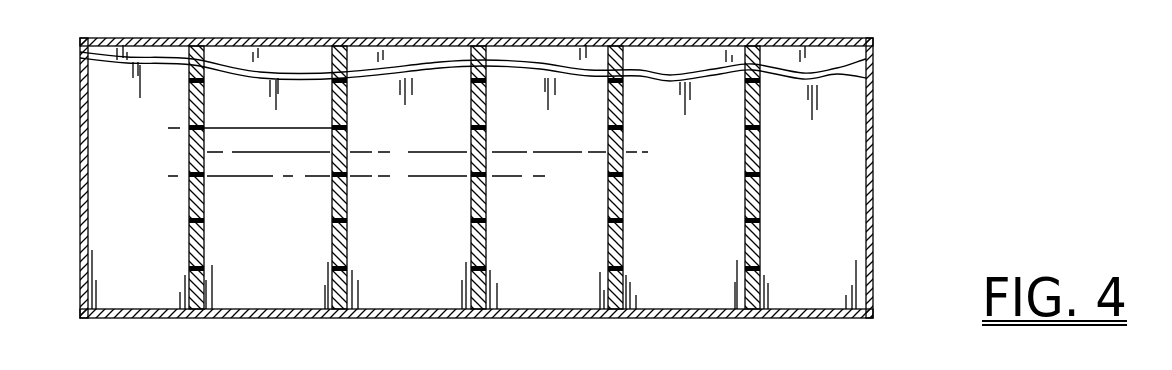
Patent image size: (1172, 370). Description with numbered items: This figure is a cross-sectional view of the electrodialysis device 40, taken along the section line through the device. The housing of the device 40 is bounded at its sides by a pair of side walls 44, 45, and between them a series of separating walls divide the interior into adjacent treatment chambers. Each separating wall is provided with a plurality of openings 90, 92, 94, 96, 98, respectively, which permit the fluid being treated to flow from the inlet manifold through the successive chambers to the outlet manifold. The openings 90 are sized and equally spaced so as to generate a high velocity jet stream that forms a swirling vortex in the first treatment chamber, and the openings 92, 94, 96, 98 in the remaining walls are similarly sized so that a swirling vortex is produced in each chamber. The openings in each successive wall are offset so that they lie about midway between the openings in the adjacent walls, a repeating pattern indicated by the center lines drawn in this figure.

The electrodialysis device 40 is at (958, 105).
The side wall 44 is at (718, 46).
The side wall 45 is at (705, 318).
The openings 90 is at (205, 175).
The openings 92 is at (348, 193).
The openings 94 is at (488, 180).
The openings 96 is at (624, 193).
The openings 98 is at (761, 170).